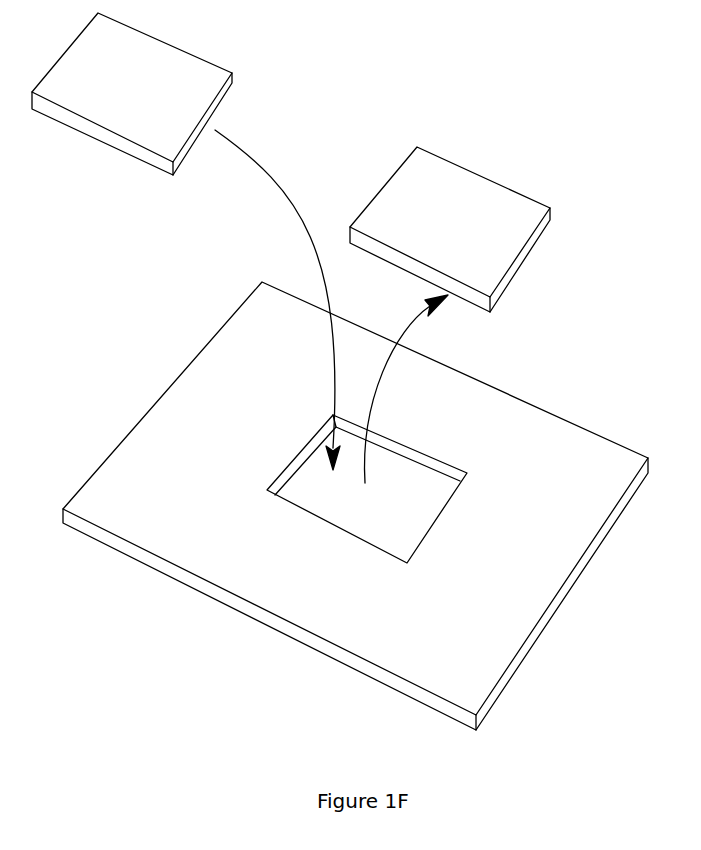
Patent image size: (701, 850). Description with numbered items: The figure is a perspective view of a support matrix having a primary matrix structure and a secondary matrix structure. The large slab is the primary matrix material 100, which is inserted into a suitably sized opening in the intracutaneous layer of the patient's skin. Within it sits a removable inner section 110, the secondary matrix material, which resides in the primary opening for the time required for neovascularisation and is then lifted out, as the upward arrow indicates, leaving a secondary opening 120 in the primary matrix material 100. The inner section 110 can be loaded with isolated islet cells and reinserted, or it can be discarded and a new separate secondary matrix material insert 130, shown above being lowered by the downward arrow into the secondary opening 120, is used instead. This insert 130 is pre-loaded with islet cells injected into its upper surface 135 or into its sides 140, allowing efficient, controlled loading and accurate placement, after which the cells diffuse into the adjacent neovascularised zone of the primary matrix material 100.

The primary matrix material 100 is at (253, 359).
The removable inner section 110 is at (537, 229).
The secondary opening 120 is at (437, 493).
The new separate secondary matrix material insert 130 is at (165, 130).
The upper surface 135 is at (107, 102).
The sides 140 is at (137, 153).